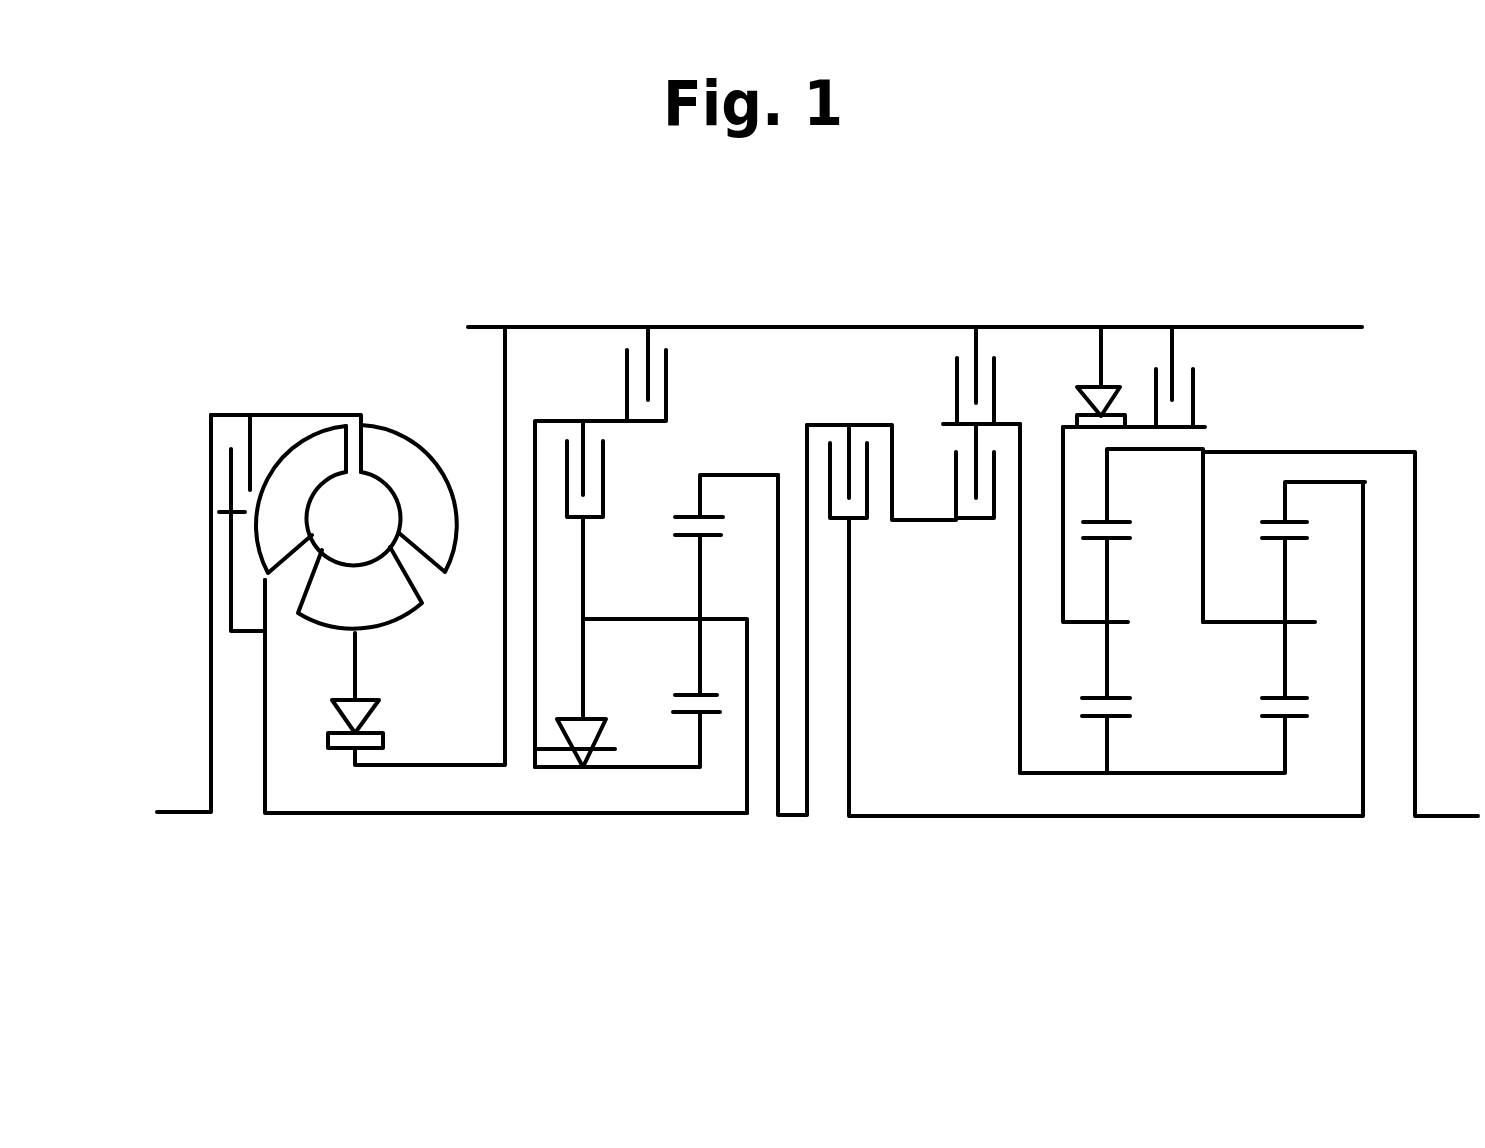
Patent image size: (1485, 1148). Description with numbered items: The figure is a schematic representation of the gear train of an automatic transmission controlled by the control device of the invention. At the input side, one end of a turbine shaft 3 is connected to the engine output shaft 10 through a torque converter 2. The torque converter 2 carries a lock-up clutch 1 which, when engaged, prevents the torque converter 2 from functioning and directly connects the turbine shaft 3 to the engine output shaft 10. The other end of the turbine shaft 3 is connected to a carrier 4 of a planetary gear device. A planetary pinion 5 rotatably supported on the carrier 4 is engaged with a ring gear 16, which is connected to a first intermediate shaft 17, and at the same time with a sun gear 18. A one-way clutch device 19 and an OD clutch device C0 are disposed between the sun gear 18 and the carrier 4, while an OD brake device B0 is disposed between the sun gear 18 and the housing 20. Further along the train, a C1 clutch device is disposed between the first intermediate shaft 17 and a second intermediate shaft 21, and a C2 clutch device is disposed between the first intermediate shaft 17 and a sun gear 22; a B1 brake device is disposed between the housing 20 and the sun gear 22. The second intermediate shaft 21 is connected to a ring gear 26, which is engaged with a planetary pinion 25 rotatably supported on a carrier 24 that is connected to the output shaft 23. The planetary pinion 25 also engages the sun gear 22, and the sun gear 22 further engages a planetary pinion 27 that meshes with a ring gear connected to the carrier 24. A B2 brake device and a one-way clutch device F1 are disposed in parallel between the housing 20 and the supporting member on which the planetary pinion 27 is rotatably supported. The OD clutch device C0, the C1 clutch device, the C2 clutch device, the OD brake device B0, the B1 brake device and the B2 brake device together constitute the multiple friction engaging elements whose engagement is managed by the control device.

The lock-up clutch 1 is at (272, 440).
The torque converter 2 is at (422, 440).
The turbine shaft 3 is at (498, 813).
The carrier 4 is at (725, 618).
The planetary pinion 5 is at (697, 580).
The engine output shaft 10 is at (188, 812).
The ring gear 16 is at (700, 498).
The first intermediate shaft 17 is at (793, 816).
The sun gear 18 is at (700, 750).
The one-way clutch device 19 is at (580, 782).
The housing 20 is at (800, 327).
The second intermediate shaft 21 is at (942, 816).
The sun gear 22 is at (1193, 773).
The output shaft 23 is at (1455, 816).
The carrier 24 is at (1177, 449).
The planetary pinion 25 is at (1285, 573).
The ring gear 26 is at (1285, 500).
The planetary pinion 27 is at (1107, 588).
The OD clutch device C0 is at (585, 408).
The OD brake device B0 is at (676, 390).
The C1 clutch device C1 is at (853, 413).
The B1 brake device B1 is at (947, 396).
The C2 clutch device C2 is at (1000, 461).
The one way clutch device F1 is at (1108, 381).
The B2 brake device B2 is at (1200, 385).